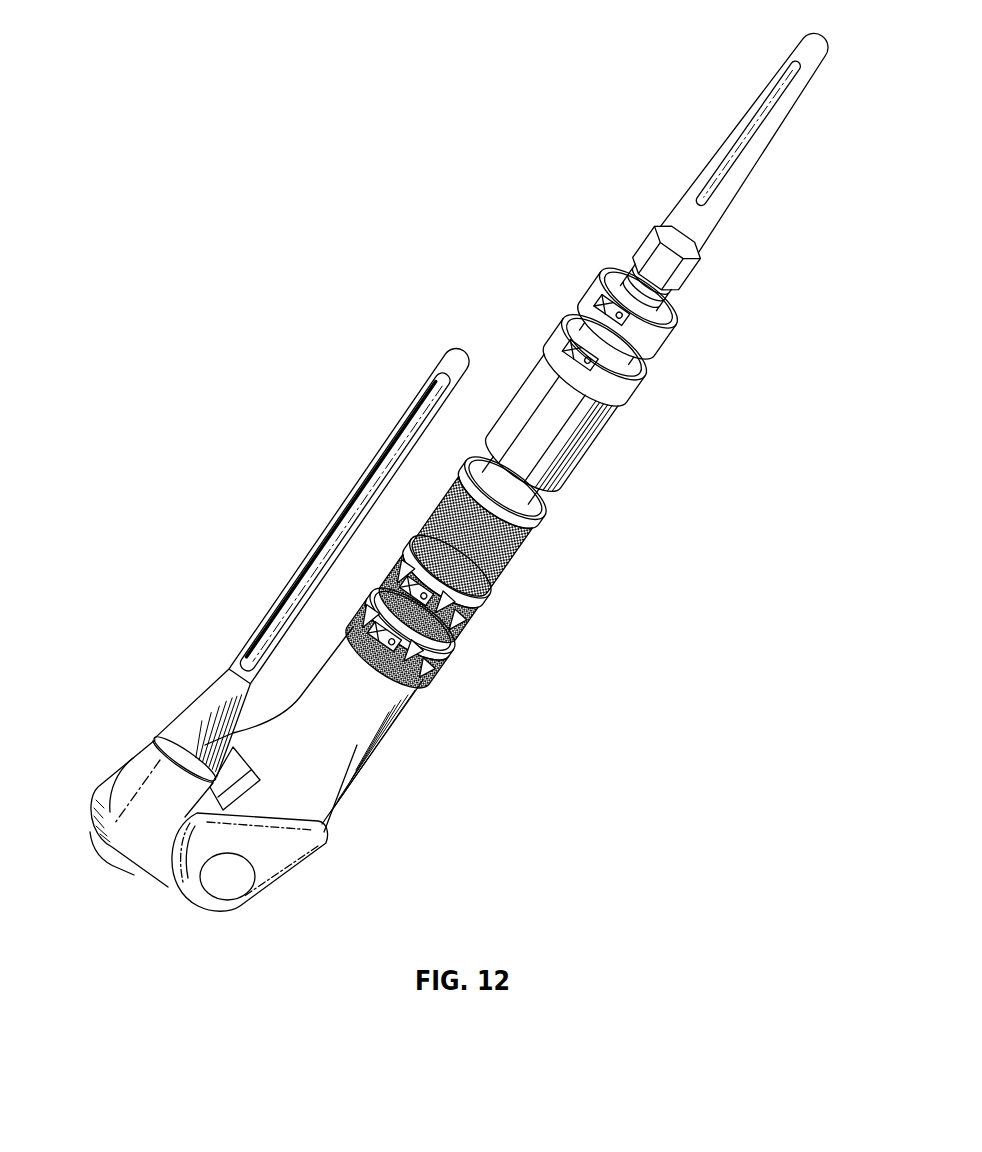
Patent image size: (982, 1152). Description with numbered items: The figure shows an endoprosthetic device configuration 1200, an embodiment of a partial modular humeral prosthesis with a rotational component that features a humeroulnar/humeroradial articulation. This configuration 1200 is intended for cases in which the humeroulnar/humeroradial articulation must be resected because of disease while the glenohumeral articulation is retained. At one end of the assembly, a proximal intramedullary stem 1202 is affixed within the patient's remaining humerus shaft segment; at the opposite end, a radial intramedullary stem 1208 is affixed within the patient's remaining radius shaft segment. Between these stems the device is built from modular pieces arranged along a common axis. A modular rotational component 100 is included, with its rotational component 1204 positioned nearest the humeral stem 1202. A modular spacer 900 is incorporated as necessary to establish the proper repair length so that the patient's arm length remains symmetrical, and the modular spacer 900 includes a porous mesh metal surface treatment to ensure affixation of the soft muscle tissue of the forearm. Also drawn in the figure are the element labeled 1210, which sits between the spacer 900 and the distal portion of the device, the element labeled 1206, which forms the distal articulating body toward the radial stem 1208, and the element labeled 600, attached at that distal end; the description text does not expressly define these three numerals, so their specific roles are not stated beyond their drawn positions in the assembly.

The endoprosthetic device configuration 1200 is at (574, 60).
The proximal intramedullary stem 1202 is at (762, 149).
The rotational component 1204 is at (612, 398).
The modular rotational component 100 is at (590, 445).
The modular spacer 900 is at (445, 625).
The coupler 1210 is at (430, 672).
The handle 1206 is at (287, 856).
The attachment body 600 is at (140, 762).
The radial intramedullary stem 1208 is at (362, 505).